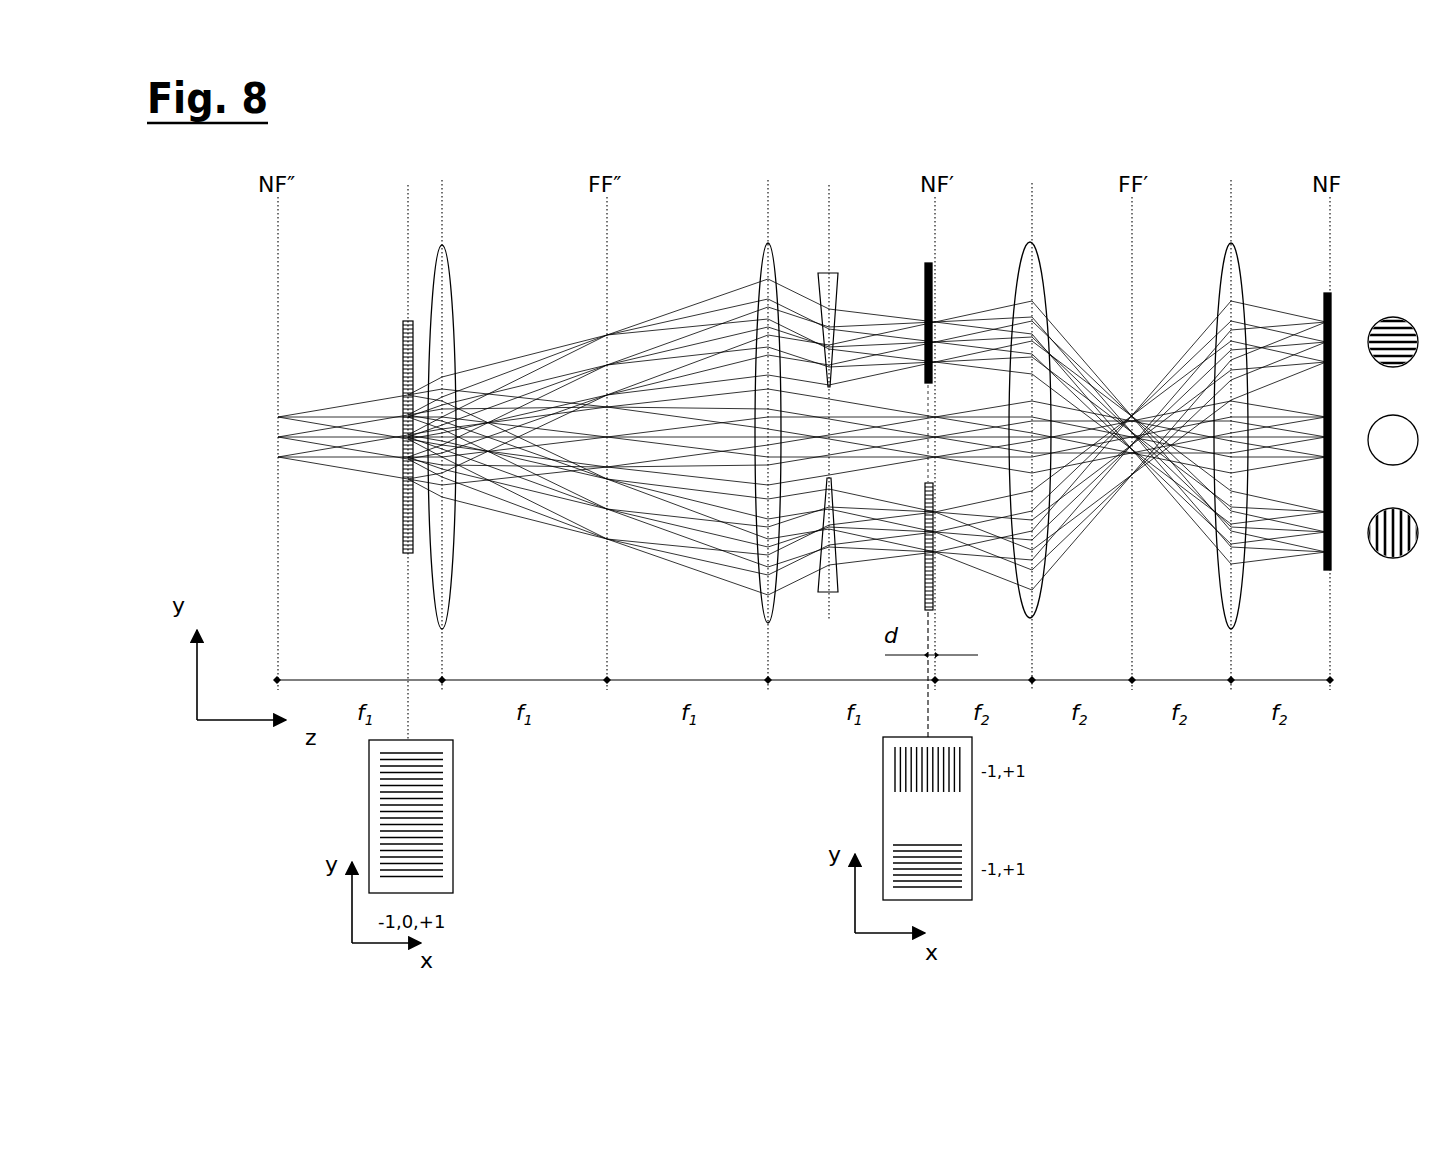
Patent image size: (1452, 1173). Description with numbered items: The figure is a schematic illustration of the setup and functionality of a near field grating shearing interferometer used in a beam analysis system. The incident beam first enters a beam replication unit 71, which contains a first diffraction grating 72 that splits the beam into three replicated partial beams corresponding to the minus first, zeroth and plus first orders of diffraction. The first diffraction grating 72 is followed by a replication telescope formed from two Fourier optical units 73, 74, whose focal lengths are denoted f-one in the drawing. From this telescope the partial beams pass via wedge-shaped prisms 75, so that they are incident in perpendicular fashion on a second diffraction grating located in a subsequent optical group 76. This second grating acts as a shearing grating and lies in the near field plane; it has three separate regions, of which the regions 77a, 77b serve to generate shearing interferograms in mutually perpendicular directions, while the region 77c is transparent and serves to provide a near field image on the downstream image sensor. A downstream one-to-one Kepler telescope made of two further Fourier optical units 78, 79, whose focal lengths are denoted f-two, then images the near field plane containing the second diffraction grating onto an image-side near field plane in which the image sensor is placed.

The beam replication unit 71 is at (862, 160).
The first diffraction grating 72 is at (396, 305).
The Fourier optical unit 73 is at (453, 310).
The Fourier optical unit 74 is at (766, 258).
The wedge-shaped prisms 75 is at (837, 628).
The optical group 76 is at (1288, 160).
The region of second diffraction grating 77a is at (934, 292).
The region of second diffraction grating 77b is at (934, 578).
The transparent region 77c is at (934, 406).
The Fourier optical unit 78 is at (1030, 290).
The Fourier optical unit 79 is at (1222, 264).